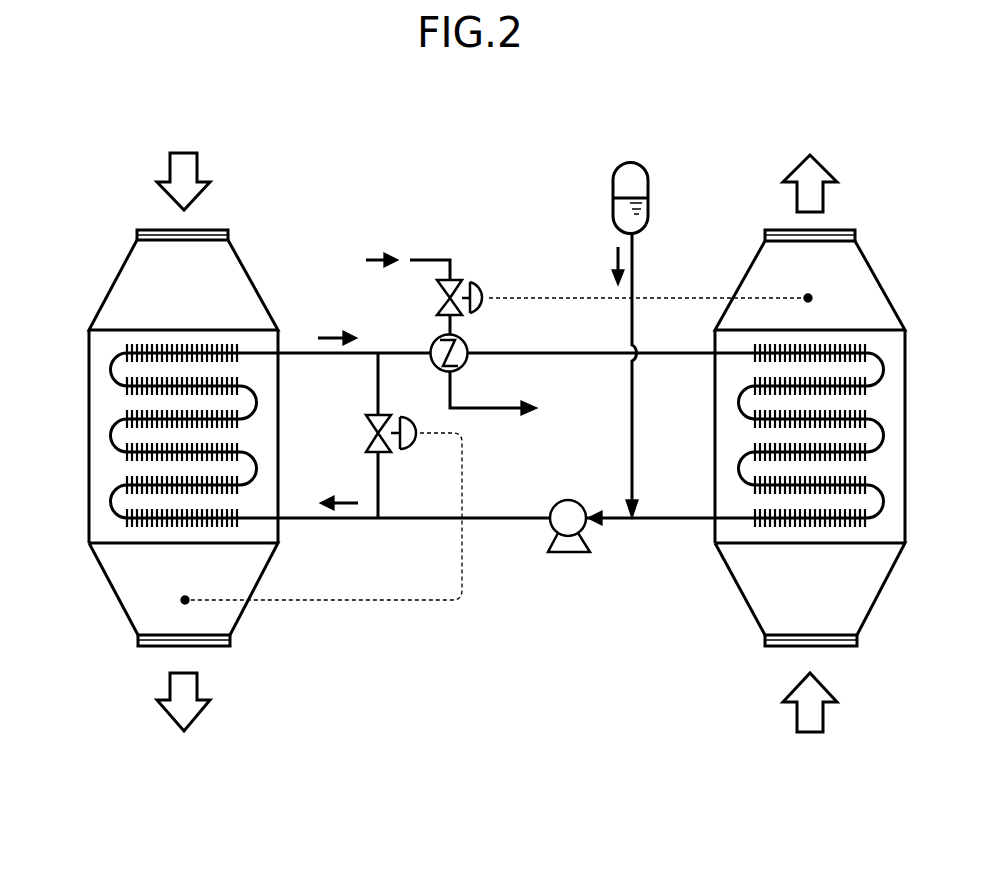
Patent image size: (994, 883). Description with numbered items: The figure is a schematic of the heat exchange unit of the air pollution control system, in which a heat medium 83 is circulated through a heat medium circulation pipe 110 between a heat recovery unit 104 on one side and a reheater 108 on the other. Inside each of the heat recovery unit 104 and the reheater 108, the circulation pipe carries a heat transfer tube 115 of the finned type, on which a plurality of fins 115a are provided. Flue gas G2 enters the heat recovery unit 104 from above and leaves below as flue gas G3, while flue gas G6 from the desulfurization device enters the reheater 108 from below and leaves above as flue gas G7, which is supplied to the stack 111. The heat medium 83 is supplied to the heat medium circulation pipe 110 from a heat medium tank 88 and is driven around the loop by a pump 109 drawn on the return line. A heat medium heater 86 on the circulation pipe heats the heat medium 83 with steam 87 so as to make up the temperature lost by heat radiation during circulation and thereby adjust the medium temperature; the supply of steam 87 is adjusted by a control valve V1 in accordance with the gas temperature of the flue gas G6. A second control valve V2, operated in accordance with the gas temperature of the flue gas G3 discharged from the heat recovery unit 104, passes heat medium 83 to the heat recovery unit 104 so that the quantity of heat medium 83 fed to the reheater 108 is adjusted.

The heat recovery unit 104 is at (240, 260).
The reheater 108 is at (743, 278).
The heat transfer tube 115 is at (110, 375).
The fins 115a is at (128, 528).
The heat medium circulation pipe 110 is at (327, 356).
The heat medium heater 86 is at (465, 362).
The steam 87 is at (380, 257).
The heat medium tank 88 is at (613, 177).
The heat medium 83 is at (335, 336).
The pump 109 is at (565, 498).
The control valve V1 is at (478, 282).
The control valve V2 is at (415, 450).
The stack 111 is at (814, 170).
The flue gas G2 is at (198, 163).
The flue gas G3 is at (197, 685).
The flue gas G6 is at (823, 717).
The flue gas G7 is at (823, 204).